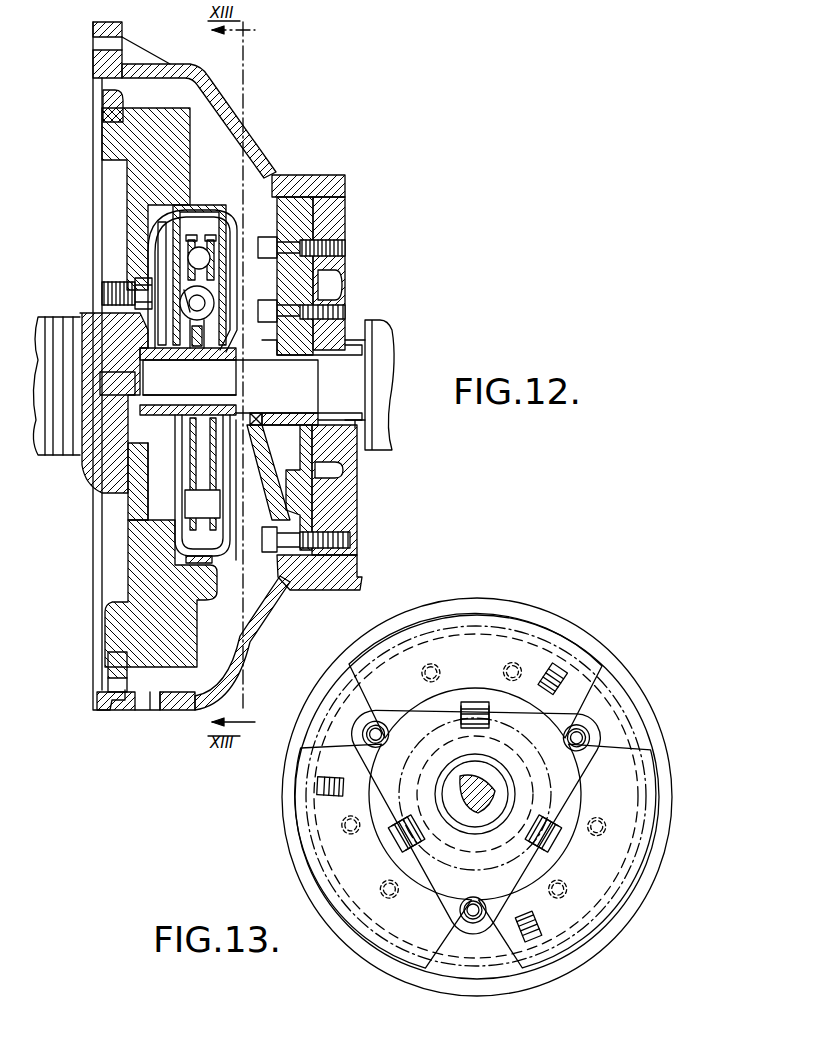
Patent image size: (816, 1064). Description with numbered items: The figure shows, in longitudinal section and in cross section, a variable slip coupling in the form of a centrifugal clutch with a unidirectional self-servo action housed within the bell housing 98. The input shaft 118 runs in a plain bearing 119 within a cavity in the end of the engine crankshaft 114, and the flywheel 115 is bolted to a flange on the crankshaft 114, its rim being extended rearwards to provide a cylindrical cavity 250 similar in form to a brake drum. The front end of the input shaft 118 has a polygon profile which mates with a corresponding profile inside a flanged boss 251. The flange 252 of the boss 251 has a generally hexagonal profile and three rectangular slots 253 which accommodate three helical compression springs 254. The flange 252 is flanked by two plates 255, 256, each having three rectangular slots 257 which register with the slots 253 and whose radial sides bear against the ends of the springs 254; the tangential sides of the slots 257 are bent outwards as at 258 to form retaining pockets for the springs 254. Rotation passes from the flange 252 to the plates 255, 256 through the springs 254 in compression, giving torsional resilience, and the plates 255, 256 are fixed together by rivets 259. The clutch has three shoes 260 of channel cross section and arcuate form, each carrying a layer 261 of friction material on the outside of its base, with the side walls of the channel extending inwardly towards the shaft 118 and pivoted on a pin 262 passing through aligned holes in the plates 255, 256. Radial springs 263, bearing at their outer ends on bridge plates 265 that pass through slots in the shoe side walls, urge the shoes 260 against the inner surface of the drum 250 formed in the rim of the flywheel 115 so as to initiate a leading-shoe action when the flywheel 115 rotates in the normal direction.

In FIG. 12, the bell housing 98 is at (262, 152).
In FIG. 12, the engine crankshaft 114 is at (100, 455).
In FIG. 12, the flywheel 115 is at (171, 118).
In FIG. 13, the flywheel 115 is at (462, 610).
In FIG. 12, the input shaft 118 is at (228, 383).
In FIG. 13, the input shaft 118 is at (483, 790).
In FIG. 12, the plain bearing 119 is at (120, 383).
In FIG. 12, the cylindrical cavity 250 is at (160, 540).
In FIG. 12, the flanged boss 251 is at (189, 377).
In FIG. 13, the flanged boss 251 is at (480, 818).
In FIG. 12, the flange 252 is at (232, 382).
In FIG. 13, the flange 252 is at (600, 775).
In FIG. 13, the rectangular slots 253 is at (462, 858).
In FIG. 12, the helical compression springs 254 is at (214, 303).
In FIG. 13, the helical compression springs 254 is at (492, 718).
In FIG. 12, the plate 255 is at (190, 262).
In FIG. 12, the plate 256 is at (210, 250).
In FIG. 12, the rectangular slots 257 is at (188, 320).
In FIG. 12, the bent-out tangential sides 258 is at (120, 298).
In FIG. 12, the rivets 259 is at (200, 208).
In FIG. 12, the shoes 260 is at (176, 232).
In FIG. 13, the shoes 260 is at (492, 640).
In FIG. 12, the layer of friction material 261 is at (210, 198).
In FIG. 13, the layer of friction material 261 is at (548, 626).
In FIG. 12, the pin 262 is at (202, 489).
In FIG. 13, the pin 262 is at (372, 736).
In FIG. 13, the radial springs 263 is at (580, 690).
In FIG. 13, the bridge plates 265 is at (566, 672).